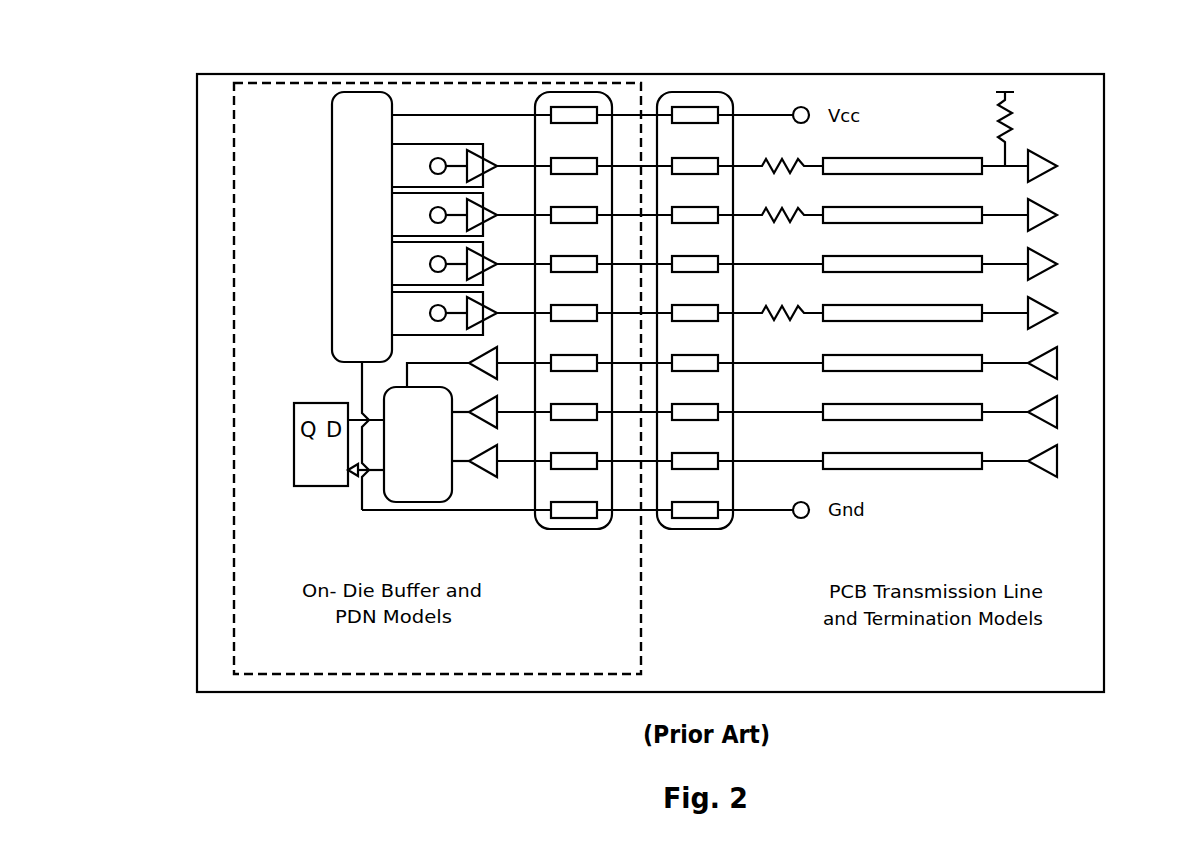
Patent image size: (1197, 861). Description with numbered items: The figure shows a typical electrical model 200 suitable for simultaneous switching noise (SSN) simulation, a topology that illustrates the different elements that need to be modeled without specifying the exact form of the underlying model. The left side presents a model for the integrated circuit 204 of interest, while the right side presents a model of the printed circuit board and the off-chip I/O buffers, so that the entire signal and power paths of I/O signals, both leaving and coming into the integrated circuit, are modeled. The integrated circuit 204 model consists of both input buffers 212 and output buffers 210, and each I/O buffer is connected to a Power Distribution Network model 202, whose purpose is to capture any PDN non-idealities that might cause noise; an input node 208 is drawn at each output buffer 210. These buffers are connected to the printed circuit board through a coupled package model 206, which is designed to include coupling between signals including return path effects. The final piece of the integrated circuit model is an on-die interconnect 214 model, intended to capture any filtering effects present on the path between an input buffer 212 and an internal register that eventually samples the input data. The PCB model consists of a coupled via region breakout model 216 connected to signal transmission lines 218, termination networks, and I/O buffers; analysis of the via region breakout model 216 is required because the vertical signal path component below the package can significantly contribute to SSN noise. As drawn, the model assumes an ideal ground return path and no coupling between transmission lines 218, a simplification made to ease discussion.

The prior art signal integrity simulation system 200 is at (1133, 113).
The Power Distribution Network (PDN) model 202 is at (332, 180).
The integrated circuit 204 is at (234, 174).
The coupled package model 206 is at (603, 93).
The buffer input node 208 is at (438, 152).
The output buffer 210 is at (483, 148).
The input buffer 212 is at (483, 474).
The on-die interconnect 214 is at (430, 502).
The coupled via region breakout model 216 is at (708, 93).
The signal transmission line 218 is at (913, 482).